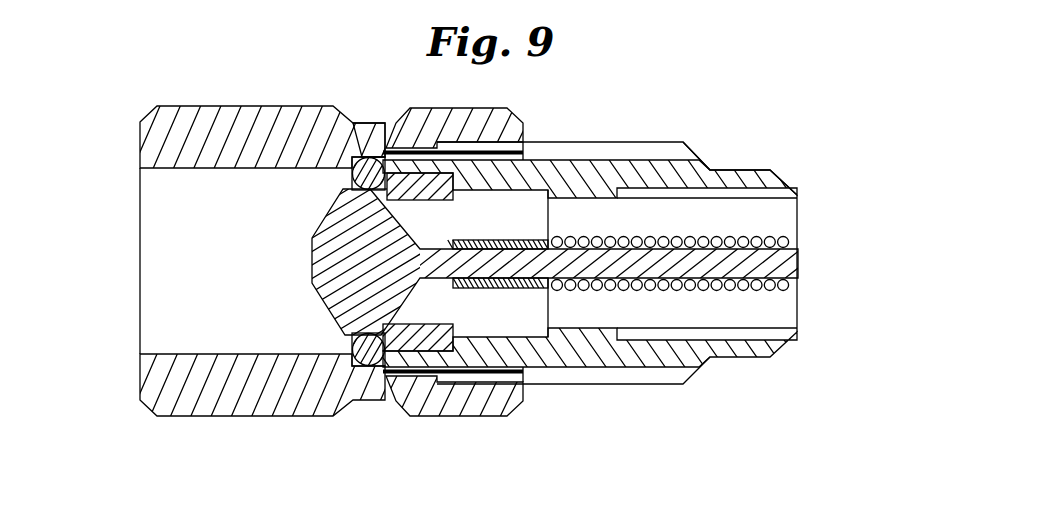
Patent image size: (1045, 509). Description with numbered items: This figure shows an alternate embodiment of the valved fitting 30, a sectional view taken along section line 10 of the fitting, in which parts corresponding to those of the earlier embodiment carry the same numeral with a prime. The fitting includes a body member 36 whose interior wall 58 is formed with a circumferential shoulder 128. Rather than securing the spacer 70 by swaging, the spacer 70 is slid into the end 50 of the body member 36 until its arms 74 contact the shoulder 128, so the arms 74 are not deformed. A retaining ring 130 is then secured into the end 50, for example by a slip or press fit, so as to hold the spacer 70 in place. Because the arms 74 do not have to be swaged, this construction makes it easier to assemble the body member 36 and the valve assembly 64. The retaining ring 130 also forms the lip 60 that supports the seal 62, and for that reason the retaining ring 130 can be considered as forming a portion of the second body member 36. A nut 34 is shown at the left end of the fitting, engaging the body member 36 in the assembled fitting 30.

The section line 10 is at (873, 138).
The valved fitting 30 is at (652, 118).
The nut 34 is at (259, 422).
The body member 36 is at (643, 396).
The end 50 is at (430, 368).
The interior wall 58 is at (667, 190).
The lip 60 is at (372, 157).
The seal 62 is at (354, 148).
The valve assembly 64 is at (249, 302).
The spacer 70 is at (517, 204).
The arms 74 is at (527, 318).
The circumferential shoulder 128 is at (583, 182).
The retaining ring 130 is at (395, 338).